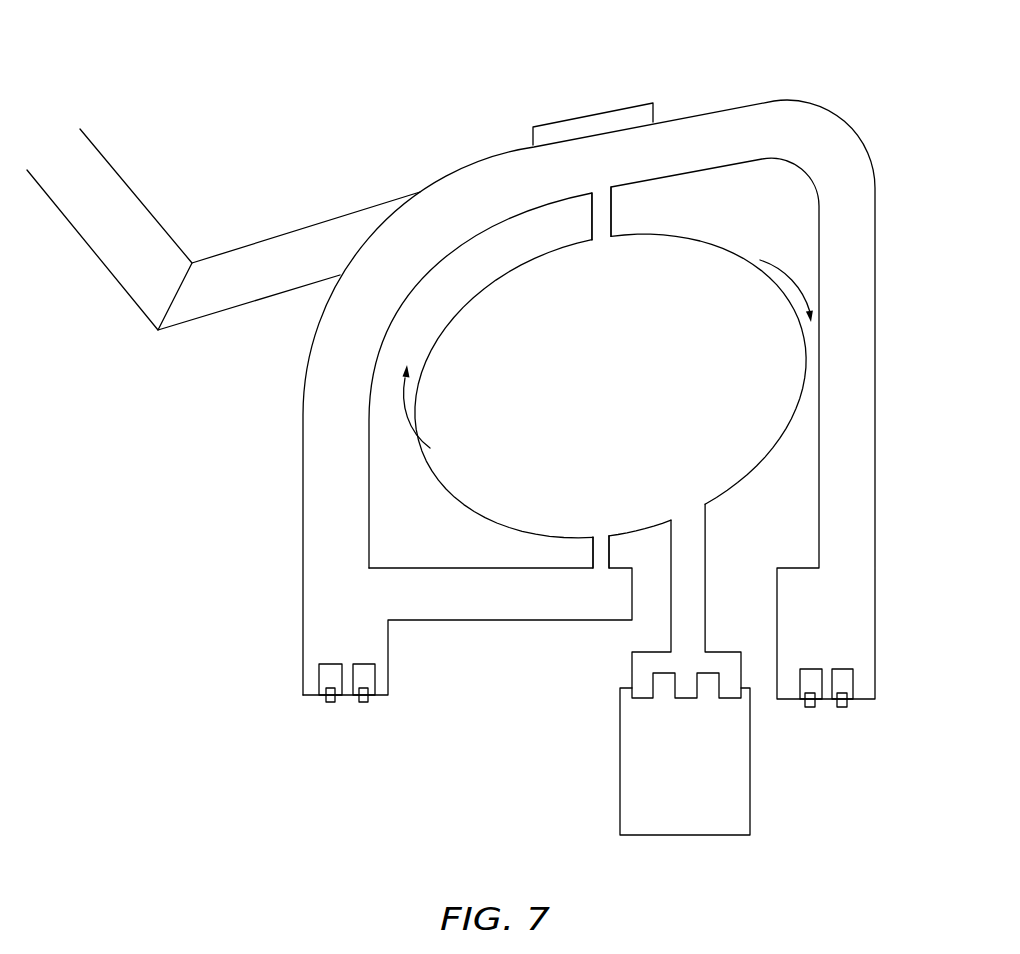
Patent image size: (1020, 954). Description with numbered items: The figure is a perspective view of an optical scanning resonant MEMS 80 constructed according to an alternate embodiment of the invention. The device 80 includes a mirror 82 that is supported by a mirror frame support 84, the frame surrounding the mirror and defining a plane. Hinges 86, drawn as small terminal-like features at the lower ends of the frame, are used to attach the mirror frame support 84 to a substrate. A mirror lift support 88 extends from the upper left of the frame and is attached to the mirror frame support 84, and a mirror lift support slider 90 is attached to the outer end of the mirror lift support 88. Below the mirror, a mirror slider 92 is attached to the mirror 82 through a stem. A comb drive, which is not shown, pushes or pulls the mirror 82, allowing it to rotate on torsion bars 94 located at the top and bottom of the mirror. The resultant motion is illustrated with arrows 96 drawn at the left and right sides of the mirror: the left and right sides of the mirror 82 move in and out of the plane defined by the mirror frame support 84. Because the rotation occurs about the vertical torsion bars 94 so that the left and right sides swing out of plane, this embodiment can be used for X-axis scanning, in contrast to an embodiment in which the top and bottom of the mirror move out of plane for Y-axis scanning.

The optical scanning resonant MEMS 80 is at (801, 56).
The mirror 82 is at (692, 250).
The mirror frame support 84 is at (822, 133).
The hinges 86 is at (813, 707).
The mirror lift support 88 is at (308, 243).
The mirror lift support slider 90 is at (106, 200).
The mirror slider 92 is at (730, 748).
The torsion bars 94 is at (600, 222).
The arrows 96 is at (788, 272).